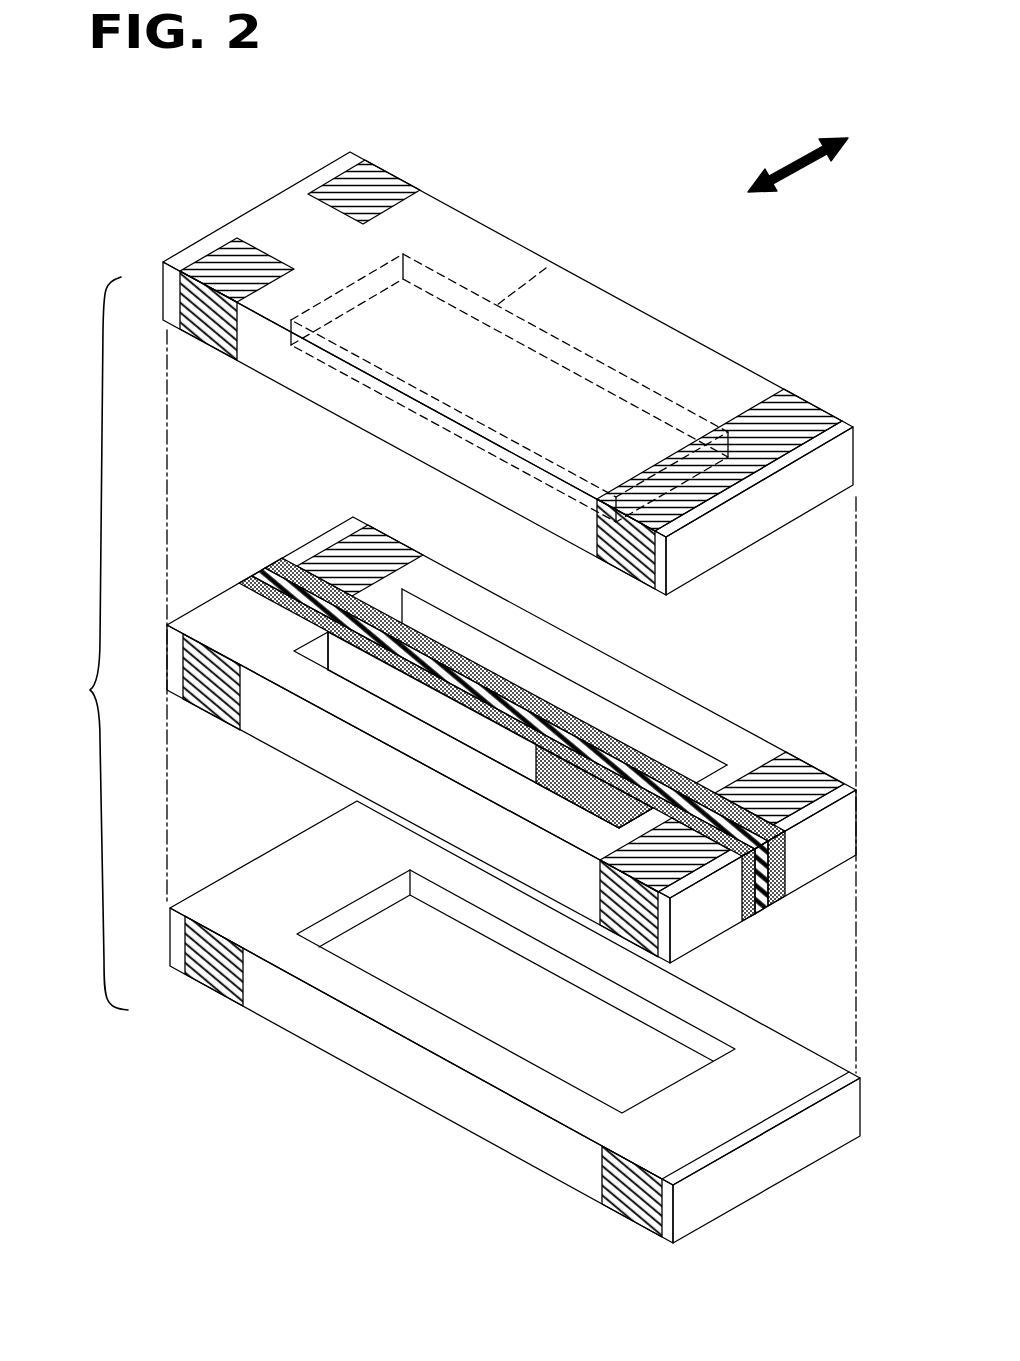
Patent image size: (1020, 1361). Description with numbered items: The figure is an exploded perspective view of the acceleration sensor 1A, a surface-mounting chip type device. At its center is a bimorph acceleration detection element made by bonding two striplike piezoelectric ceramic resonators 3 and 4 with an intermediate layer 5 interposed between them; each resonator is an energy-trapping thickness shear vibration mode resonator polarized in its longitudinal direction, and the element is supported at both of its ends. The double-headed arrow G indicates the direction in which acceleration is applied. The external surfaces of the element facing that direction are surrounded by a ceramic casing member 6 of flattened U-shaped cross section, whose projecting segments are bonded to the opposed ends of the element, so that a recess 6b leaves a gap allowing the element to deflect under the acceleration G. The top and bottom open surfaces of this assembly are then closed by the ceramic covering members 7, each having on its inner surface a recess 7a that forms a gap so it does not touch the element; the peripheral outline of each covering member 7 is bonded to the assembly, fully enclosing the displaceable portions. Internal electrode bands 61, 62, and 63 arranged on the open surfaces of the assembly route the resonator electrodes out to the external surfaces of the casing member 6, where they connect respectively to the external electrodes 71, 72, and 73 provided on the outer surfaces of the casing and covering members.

The acceleration sensor 1A is at (79, 643).
The piezoelectric ceramic resonator 3 is at (690, 790).
The piezoelectric ceramic resonator 4 is at (565, 770).
The intermediate layer 5 is at (480, 690).
The casing member 6 is at (467, 590).
The recess 6b is at (563, 675).
The internal electrode band 61 is at (760, 755).
The internal electrode band 62 is at (333, 537).
The internal electrode band 63 is at (257, 663).
The covering member 7 is at (633, 327).
The recess 7a is at (552, 257).
The external electrode 71 is at (793, 413).
The external electrode 72 is at (371, 168).
The external electrode 73 is at (213, 243).
The acceleration G is at (798, 156).